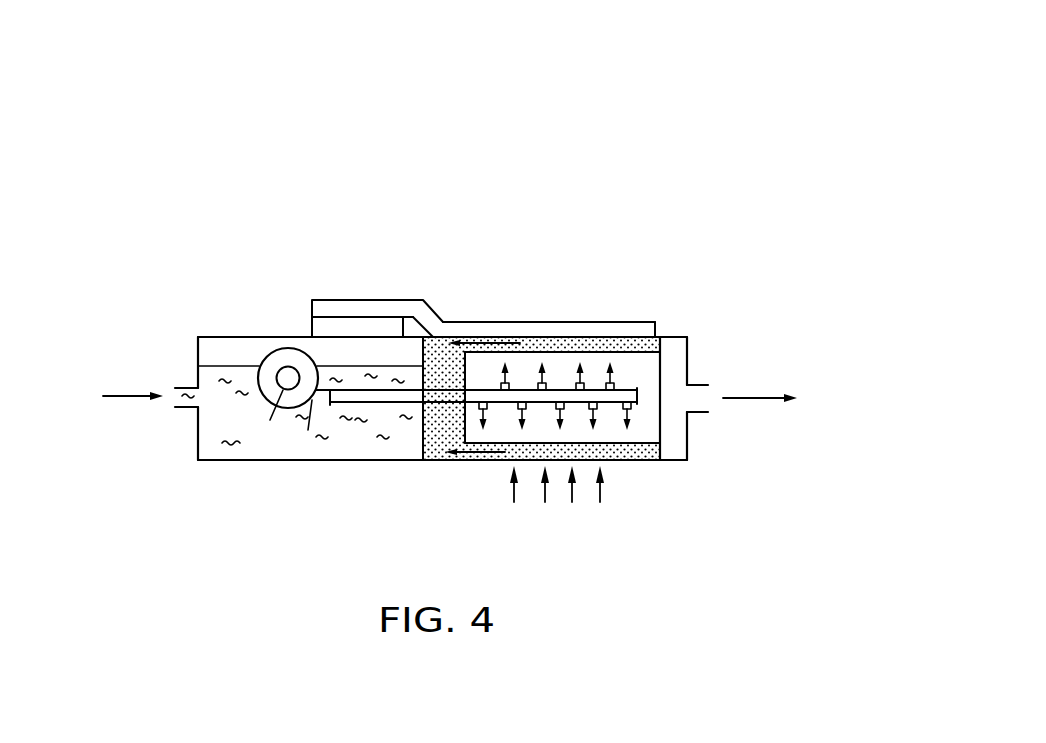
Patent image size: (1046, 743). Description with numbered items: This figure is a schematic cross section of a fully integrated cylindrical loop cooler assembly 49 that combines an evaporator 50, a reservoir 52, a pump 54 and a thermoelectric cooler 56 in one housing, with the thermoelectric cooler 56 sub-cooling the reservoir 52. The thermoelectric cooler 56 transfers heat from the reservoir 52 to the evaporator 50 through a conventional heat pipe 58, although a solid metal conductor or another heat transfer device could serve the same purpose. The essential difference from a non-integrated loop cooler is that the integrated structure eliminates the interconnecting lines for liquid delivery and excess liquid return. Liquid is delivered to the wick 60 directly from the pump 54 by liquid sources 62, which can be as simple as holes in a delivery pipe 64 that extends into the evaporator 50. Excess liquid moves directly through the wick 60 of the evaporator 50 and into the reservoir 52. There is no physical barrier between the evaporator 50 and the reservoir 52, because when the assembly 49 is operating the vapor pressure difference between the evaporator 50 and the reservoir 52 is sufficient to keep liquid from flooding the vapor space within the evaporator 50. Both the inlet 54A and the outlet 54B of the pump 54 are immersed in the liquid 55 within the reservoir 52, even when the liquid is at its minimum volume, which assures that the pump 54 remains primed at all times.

The cylindrical loop cooler assembly 49 is at (648, 108).
The evaporator 50 is at (463, 455).
The reservoir 52 is at (230, 459).
The pump 54 is at (276, 459).
The inlet 54A is at (270, 420).
The outlet 54B is at (308, 430).
The liquid 55 is at (253, 436).
The thermoelectric cooler 56 is at (310, 322).
The heat pipe 58 is at (470, 320).
The wick 60 is at (595, 340).
The liquid sources 62 is at (613, 385).
The delivery pipe 64 is at (383, 403).